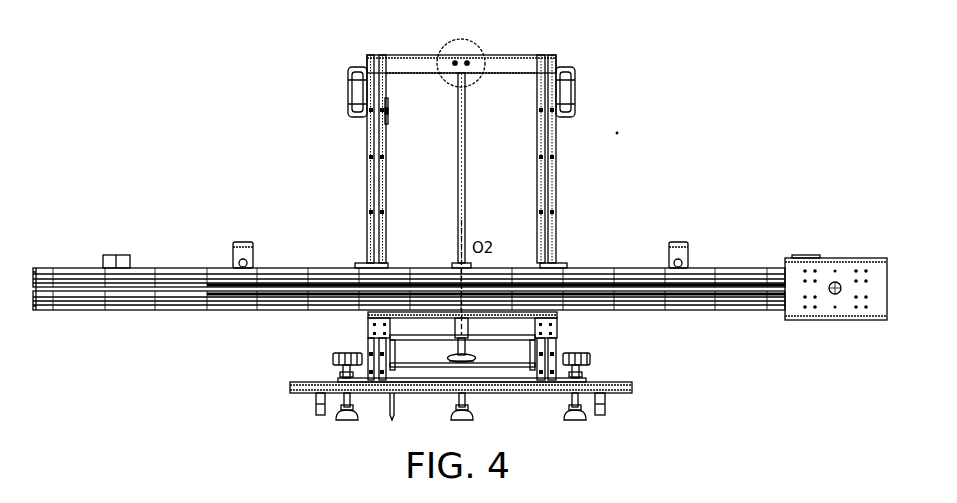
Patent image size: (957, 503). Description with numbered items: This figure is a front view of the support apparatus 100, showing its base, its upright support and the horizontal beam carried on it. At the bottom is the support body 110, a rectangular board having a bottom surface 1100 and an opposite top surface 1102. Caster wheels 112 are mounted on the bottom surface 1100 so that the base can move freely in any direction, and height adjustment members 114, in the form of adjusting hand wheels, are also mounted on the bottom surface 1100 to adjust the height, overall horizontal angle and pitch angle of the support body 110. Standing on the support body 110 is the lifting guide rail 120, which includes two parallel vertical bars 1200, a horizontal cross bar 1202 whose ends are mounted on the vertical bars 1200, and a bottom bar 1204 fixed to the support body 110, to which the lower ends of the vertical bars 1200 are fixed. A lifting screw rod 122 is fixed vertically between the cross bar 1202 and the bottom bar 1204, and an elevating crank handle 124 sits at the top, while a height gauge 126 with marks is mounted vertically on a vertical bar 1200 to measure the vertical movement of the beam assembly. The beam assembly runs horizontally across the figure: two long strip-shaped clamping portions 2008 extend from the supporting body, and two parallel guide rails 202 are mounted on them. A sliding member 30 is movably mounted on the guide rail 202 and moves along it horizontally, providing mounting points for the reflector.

The truss assembling device 100 is at (617, 134).
The support body 110 is at (221, 358).
The bottom surface 1100 is at (312, 392).
The top surface 1102 is at (312, 381).
The caster wheels 112 is at (608, 410).
The height adjustment members 114 is at (590, 356).
The lifting guide rail 120 is at (551, 194).
The vertical bar 1200 is at (380, 162).
The cross bar 1202 is at (395, 56).
The bottom bar 1204 is at (400, 370).
The lifting screw rod 122 is at (458, 212).
The elevating crank handle 124 is at (452, 47).
The height gauge 126 is at (387, 121).
The clamping portions 2008 is at (553, 263).
The guide rails 202 is at (702, 280).
The sliding member 30 is at (824, 266).